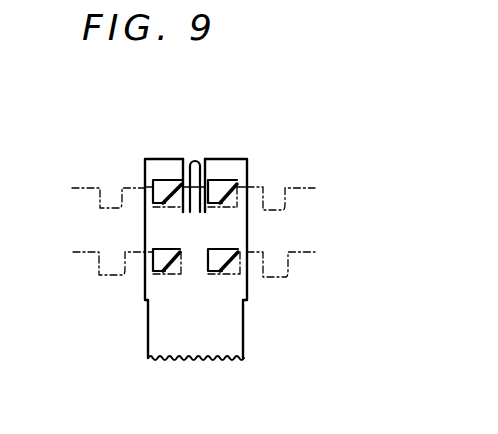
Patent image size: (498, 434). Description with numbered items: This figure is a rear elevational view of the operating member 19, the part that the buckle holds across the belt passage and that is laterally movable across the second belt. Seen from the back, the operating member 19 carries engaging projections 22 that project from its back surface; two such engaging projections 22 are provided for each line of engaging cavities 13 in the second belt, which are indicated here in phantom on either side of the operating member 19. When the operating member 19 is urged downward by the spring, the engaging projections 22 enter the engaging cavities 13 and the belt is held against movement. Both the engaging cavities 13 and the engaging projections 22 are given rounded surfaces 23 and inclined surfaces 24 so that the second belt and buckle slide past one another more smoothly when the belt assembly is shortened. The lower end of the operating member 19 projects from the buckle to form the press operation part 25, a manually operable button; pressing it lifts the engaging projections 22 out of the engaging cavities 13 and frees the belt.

The engaging cavities 13 is at (110, 198).
The operating member 19 is at (244, 359).
The engaging projections 22 is at (168, 190).
The rounded surfaces 23 is at (292, 190).
The inclined surfaces 24 is at (233, 189).
The press operation part 25 is at (174, 343).